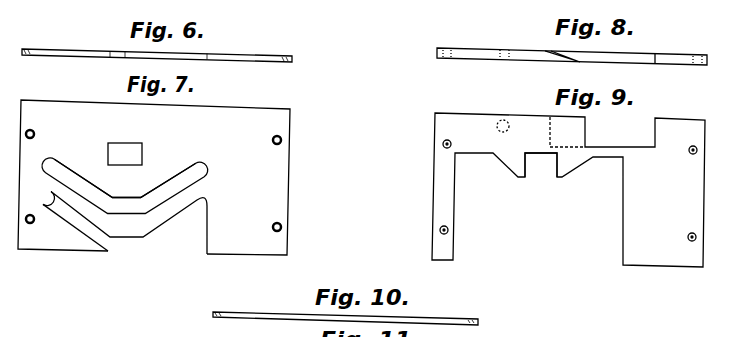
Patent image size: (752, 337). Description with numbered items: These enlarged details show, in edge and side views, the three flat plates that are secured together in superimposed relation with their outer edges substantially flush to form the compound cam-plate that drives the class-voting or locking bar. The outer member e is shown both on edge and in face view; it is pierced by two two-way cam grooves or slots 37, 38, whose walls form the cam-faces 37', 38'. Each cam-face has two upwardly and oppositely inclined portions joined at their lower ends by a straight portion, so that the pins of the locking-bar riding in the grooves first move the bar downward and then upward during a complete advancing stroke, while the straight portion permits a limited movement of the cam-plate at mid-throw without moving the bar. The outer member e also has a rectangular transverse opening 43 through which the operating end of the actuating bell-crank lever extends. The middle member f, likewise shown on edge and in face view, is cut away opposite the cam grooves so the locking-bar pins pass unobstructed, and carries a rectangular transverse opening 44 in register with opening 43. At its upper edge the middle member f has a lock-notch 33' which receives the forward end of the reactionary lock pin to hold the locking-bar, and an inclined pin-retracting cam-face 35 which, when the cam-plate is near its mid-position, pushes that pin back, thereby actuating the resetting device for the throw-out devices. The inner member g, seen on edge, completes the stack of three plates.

In FIG. 6, the outer member of the cam-plate e is at (168, 56).
In FIG. 7, the outer member of the cam-plate e is at (289, 167).
In FIG. 6, the rectangular transverse opening 43 is at (123, 53).
In FIG. 7, the rectangular transverse opening 43 is at (128, 155).
In FIG. 7, the cam groove 37 is at (125, 177).
In FIG. 7, the cam-face 37' is at (124, 175).
In FIG. 7, the cam groove 38 is at (122, 223).
In FIG. 7, the cam-face 38' is at (75, 242).
In FIG. 8, the middle member of the cam-plate f is at (561, 56).
In FIG. 9, the middle member of the cam-plate f is at (559, 190).
In FIG. 8, the lock-notch 33' is at (502, 41).
In FIG. 9, the lock-notch 33' is at (509, 115).
In FIG. 8, the pin-retracting cam-face 35 is at (566, 55).
In FIG. 9, the pin-retracting cam-face 35 is at (587, 131).
In FIG. 9, the rectangular transverse opening 44 is at (541, 167).
In FIG. 10, the inner member of the cam-plate g is at (242, 312).